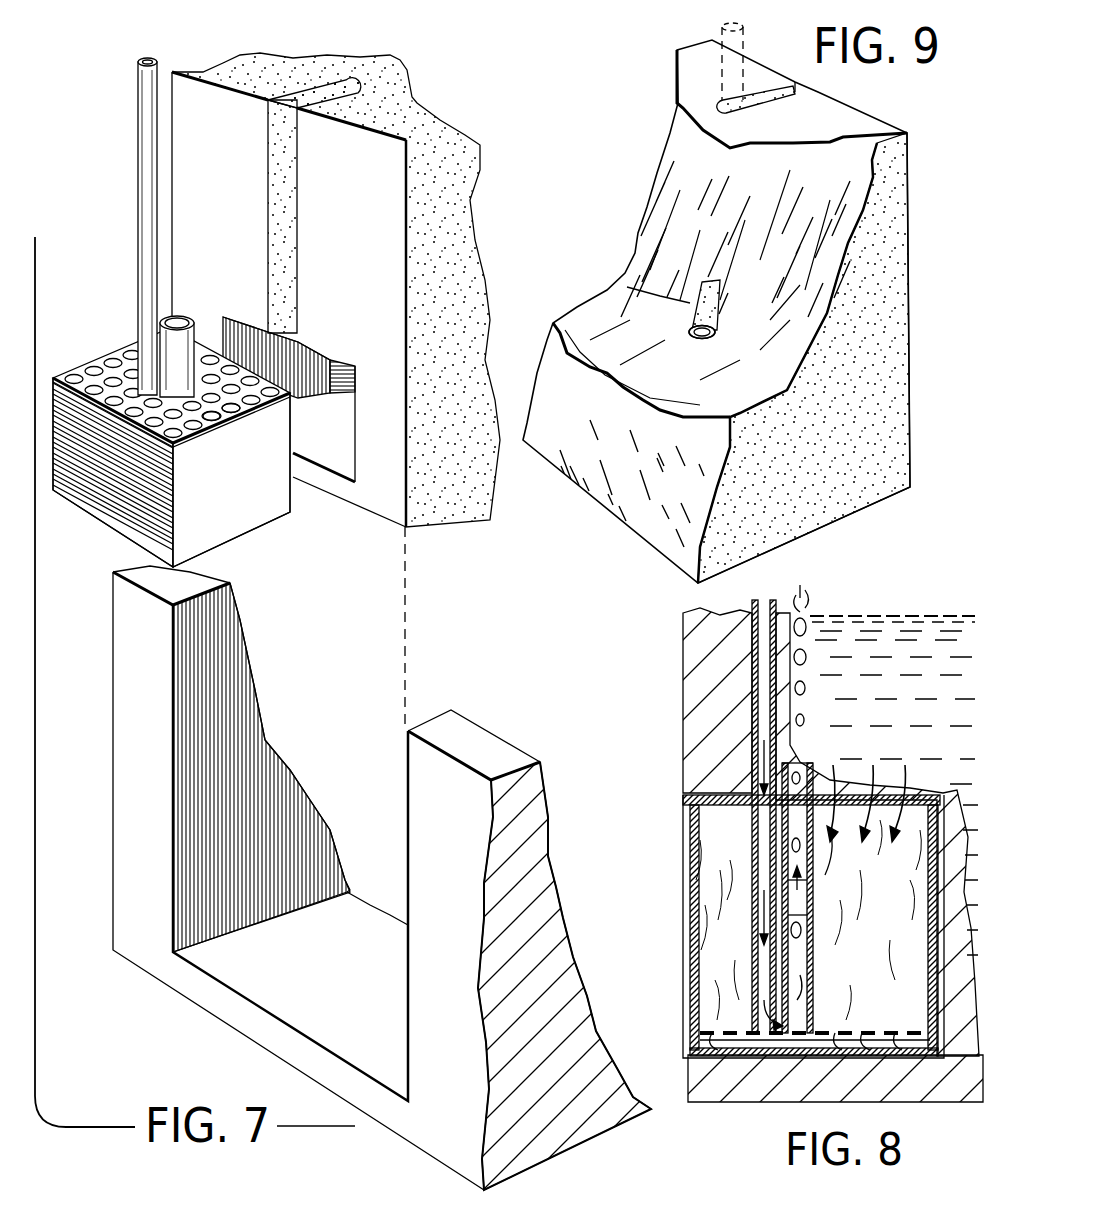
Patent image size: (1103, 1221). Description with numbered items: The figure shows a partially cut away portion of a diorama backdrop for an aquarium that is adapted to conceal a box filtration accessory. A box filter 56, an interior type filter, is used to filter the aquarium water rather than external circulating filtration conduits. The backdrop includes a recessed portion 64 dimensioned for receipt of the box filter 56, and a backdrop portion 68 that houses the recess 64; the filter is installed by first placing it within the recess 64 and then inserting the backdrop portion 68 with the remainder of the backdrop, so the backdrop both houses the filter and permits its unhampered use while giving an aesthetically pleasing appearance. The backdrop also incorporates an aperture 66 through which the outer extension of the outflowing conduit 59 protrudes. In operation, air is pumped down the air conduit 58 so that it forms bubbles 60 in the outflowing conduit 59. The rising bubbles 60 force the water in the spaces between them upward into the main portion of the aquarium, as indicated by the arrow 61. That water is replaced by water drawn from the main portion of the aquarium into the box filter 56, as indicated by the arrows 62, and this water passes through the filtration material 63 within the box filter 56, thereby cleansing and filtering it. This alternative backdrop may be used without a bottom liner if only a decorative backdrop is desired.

In FIG. 7, the box filter 56 is at (225, 527).
In FIG. 8, the box filter 56 is at (692, 977).
In FIG. 7, the air conduit 58 is at (145, 263).
In FIG. 9, the air conduit 58 is at (732, 61).
In FIG. 8, the air conduit 58 is at (752, 610).
In FIG. 7, the outflowing conduit 59 is at (193, 317).
In FIG. 9, the outflowing conduit 59 is at (690, 327).
In FIG. 8, the outflowing conduit 59 is at (812, 860).
In FIG. 8, the bubbles 60 is at (812, 898).
In FIG. 8, the arrow 61 is at (812, 917).
In FIG. 8, the arrows 62 is at (850, 765).
In FIG. 8, the filtration material 63 is at (908, 900).
In FIG. 7, the recessed portion 64 is at (305, 442).
In FIG. 9, the aperture 66 is at (712, 336).
In FIG. 9, the backdrop portion 68 is at (877, 286).